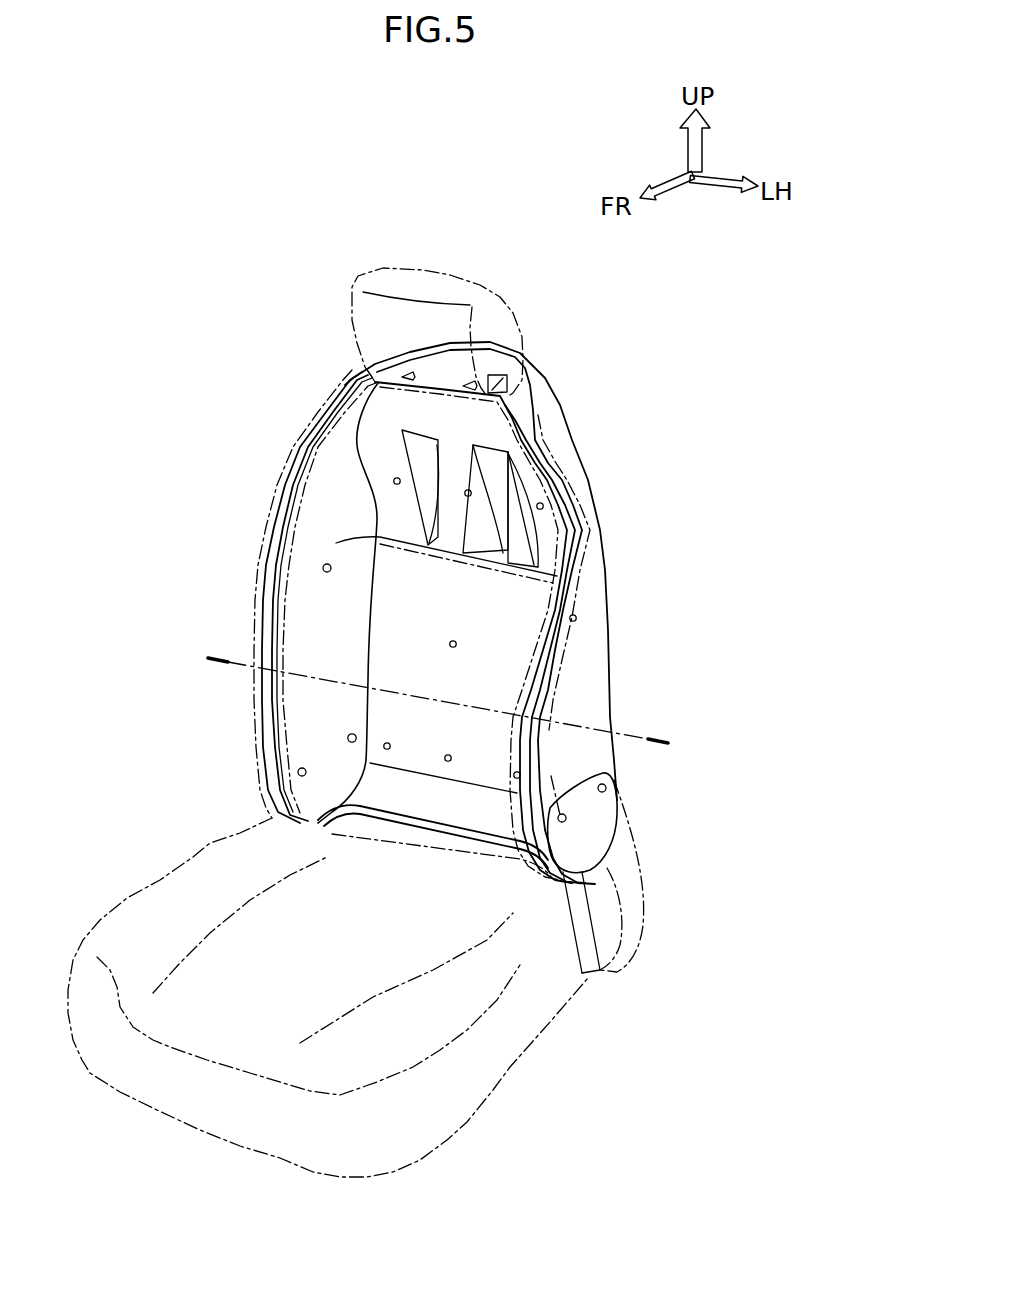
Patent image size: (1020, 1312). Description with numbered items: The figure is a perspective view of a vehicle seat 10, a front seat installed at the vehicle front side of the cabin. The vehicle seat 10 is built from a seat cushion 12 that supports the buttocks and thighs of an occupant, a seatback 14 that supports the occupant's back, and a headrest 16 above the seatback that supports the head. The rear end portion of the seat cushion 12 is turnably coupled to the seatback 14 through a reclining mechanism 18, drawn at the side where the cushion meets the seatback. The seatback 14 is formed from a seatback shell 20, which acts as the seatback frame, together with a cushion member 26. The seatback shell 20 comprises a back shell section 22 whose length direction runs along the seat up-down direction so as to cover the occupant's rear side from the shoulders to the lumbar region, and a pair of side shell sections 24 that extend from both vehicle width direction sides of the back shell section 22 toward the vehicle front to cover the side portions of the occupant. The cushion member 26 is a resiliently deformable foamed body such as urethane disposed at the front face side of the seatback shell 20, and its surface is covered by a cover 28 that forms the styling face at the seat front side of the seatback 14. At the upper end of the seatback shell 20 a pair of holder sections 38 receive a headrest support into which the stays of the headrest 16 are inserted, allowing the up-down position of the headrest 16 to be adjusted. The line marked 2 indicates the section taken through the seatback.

The vehicle seat 10 is at (684, 357).
The seat cushion 12 is at (488, 1084).
The seatback 14 is at (633, 525).
The headrest 16 is at (404, 283).
The reclining mechanism 18 is at (628, 872).
The seatback shell 20 is at (229, 565).
The back shell section 22 is at (561, 436).
The side shell section 24 is at (332, 517).
The cushion member 26 is at (563, 633).
The cover 28 is at (579, 598).
The holder section 38 is at (407, 374).
The section line 2- 2 is at (218, 650).